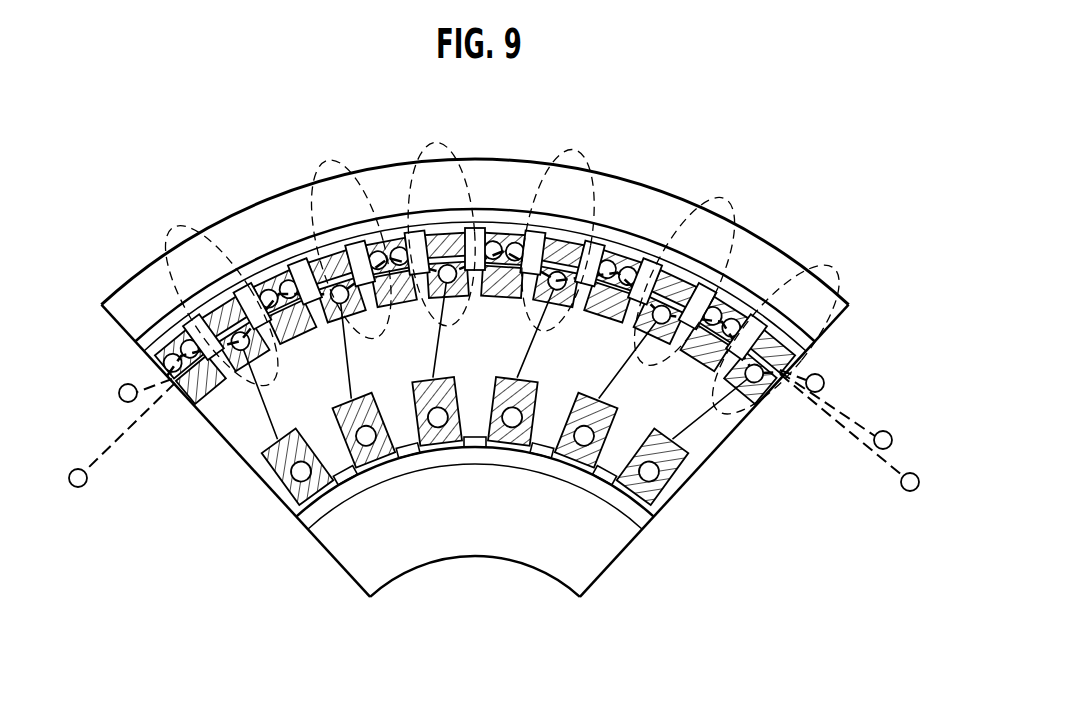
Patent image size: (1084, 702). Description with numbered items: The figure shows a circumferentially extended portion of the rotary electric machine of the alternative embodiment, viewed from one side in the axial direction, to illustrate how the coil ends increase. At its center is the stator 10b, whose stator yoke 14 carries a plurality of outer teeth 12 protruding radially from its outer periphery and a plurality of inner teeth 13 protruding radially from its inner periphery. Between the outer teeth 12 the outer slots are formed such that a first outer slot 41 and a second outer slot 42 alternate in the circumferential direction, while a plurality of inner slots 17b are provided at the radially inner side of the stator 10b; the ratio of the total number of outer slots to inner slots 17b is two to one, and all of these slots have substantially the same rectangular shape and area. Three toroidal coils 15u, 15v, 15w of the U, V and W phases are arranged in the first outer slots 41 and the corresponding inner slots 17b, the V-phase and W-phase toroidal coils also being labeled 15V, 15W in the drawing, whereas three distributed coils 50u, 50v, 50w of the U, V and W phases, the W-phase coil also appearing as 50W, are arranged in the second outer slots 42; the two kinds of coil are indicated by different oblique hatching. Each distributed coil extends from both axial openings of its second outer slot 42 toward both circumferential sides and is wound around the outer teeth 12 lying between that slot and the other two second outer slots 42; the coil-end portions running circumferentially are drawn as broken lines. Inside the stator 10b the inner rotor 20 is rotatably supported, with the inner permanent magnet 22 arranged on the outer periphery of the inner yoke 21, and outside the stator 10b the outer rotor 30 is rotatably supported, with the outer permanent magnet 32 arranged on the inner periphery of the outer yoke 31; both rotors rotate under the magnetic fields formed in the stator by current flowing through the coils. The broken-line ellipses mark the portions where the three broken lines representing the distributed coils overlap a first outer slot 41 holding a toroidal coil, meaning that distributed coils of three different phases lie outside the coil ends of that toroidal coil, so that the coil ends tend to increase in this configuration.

The stator 10b is at (727, 437).
The outer teeth 12 is at (595, 212).
The inner teeth 13 is at (472, 445).
The stator yoke 14 is at (700, 447).
The inner slot 17b is at (575, 455).
The inner rotor 20 is at (508, 549).
The inner yoke 21 is at (605, 537).
The inner permanent magnet 22 is at (637, 518).
The outer rotor 30 is at (509, 271).
The outer yoke 31 is at (768, 226).
The outer permanent magnet 32 is at (800, 340).
The first outer slot 41 is at (318, 243).
The second outer slot 42 is at (380, 240).
The U-phase distributed coil 50u is at (208, 393).
The V-phase distributed coil 50v is at (311, 327).
The W-phase distributed coil 50w is at (398, 303).
The W-phase distributed coil 50W is at (733, 275).
The U-phase toroidal coil 15u is at (240, 335).
The V-phase toroidal coil 15v is at (338, 290).
The W-phase toroidal coil 15w is at (446, 268).
The V-phase toroidal coil 15V is at (662, 310).
The W-phase toroidal coil 15W is at (790, 318).